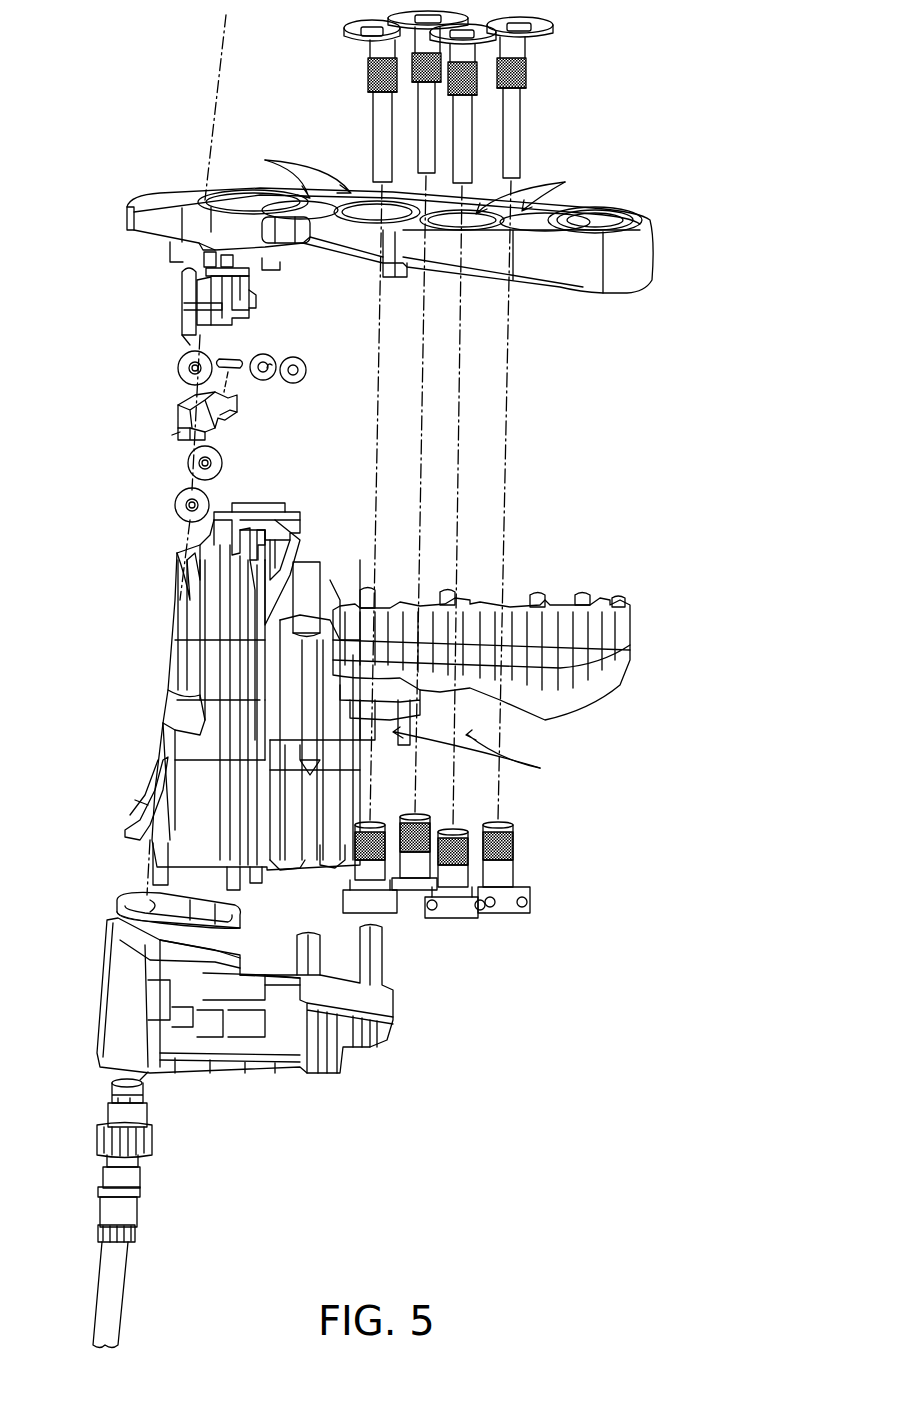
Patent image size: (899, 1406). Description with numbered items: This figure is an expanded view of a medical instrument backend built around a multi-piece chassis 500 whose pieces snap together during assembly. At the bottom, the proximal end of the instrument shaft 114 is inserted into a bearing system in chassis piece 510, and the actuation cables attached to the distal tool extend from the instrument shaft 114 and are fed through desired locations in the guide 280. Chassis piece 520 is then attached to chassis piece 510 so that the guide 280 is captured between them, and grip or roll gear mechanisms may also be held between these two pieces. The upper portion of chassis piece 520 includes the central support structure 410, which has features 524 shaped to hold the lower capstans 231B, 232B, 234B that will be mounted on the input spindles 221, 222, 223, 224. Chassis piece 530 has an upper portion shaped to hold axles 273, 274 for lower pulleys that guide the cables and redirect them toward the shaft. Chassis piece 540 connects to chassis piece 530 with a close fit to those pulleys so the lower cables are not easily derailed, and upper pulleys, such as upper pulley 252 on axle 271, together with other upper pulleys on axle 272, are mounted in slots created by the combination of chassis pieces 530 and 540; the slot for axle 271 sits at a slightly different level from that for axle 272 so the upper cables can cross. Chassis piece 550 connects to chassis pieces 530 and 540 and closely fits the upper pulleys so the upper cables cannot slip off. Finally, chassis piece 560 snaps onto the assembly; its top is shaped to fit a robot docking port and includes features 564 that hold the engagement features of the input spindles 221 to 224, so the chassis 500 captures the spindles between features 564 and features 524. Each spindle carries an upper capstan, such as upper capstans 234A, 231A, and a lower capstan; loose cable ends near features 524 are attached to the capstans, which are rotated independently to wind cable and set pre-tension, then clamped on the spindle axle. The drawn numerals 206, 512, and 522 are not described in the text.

The instrument shaft 114 is at (112, 1285).
The axis 206 is at (215, 68).
The input spindle 221 is at (512, 162).
The input spindle 222 is at (480, 130).
The input spindle 223 is at (415, 150).
The input spindle 224 is at (372, 110).
The upper capstan 231A is at (518, 68).
The lower capstan 231B is at (513, 850).
The lower capstan 232B is at (460, 905).
The upper capstan 234A is at (366, 70).
The lower capstan 234B is at (380, 900).
The upper pulley 252 is at (293, 383).
The axle 271 is at (178, 368).
The axle 272 is at (228, 372).
The axle 273 is at (188, 463).
The axle 274 is at (178, 505).
The guide 280 is at (130, 888).
The central support structure 410 is at (470, 600).
The multi-piece chassis 500 is at (553, 900).
The chassis piece 510 is at (388, 1038).
The connector 512 is at (92, 1082).
The chassis piece 520 is at (258, 878).
The frame flange 522 is at (126, 790).
The features 524 is at (486, 754).
The chassis piece 530 is at (300, 528).
The chassis piece 540 is at (175, 412).
The chassis piece 550 is at (256, 300).
The chassis piece 560 is at (163, 195).
The features 564 is at (411, 181).